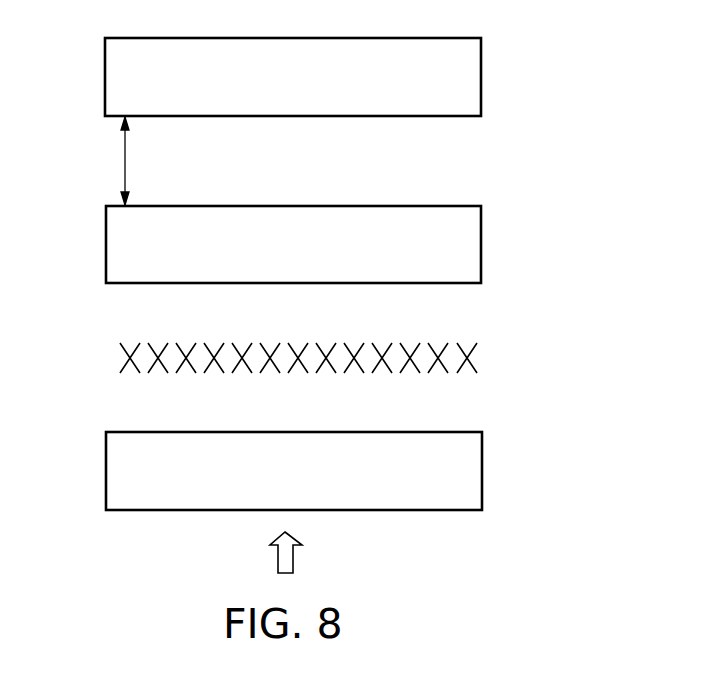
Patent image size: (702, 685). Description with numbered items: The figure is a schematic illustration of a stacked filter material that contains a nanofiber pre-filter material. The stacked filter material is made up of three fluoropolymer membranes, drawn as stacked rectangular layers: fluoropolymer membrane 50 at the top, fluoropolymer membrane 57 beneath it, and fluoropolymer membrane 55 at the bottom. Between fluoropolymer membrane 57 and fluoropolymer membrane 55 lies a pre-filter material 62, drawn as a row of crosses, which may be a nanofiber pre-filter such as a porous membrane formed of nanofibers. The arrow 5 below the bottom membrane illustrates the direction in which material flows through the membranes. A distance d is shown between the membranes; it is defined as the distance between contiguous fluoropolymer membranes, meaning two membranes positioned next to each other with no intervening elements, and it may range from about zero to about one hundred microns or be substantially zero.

The fluoropolymer membrane 50 is at (481, 83).
The fluoropolymer membrane 57 is at (481, 244).
The distance between contiguous fluoropolymer membranes d is at (124, 162).
The pre-filter material 62 is at (478, 360).
The fluoropolymer membrane 55 is at (483, 488).
The arrow 5 is at (295, 563).